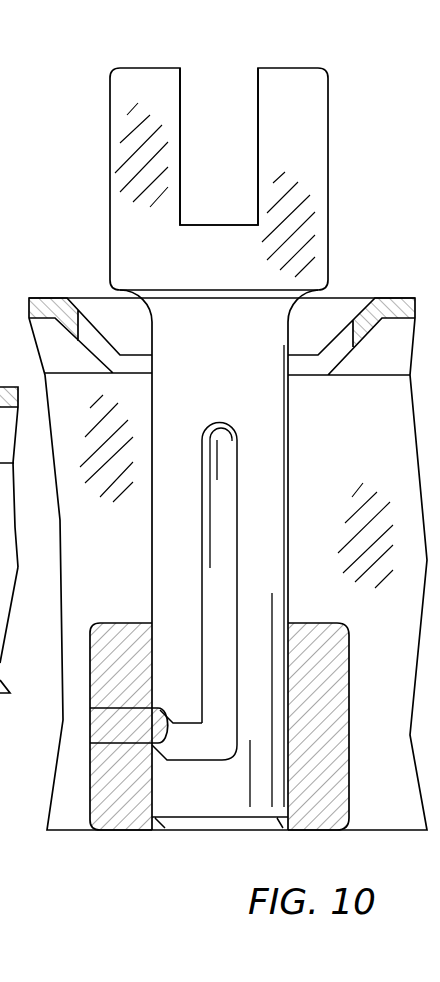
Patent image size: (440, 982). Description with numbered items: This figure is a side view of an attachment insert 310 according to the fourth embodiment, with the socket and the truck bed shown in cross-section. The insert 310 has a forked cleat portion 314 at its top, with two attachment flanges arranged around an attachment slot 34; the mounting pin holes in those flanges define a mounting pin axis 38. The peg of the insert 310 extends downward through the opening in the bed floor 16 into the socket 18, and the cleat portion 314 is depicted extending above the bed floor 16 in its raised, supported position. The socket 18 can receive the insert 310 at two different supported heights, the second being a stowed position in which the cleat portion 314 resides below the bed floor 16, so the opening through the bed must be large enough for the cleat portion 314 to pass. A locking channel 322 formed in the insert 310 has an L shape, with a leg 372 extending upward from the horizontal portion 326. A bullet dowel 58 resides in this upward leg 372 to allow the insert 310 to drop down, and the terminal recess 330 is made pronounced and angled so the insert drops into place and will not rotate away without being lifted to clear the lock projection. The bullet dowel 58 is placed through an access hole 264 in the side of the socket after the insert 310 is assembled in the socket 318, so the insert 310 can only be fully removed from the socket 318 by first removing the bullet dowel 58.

The bed floor 16 is at (380, 298).
The socket 18 is at (0, 505).
The attachment slot 34 is at (224, 118).
The mounting pin axis 38 is at (0, 175).
The bullet dowel 58 is at (112, 748).
The access hole 264 is at (0, 580).
The insert 310 is at (342, 102).
The cleat portion 314 is at (330, 172).
The socket 318 is at (344, 726).
The locking channel 322 is at (237, 537).
The horizontal portion 326 is at (205, 748).
The terminal recess 330 is at (167, 747).
The leg 372 is at (233, 632).